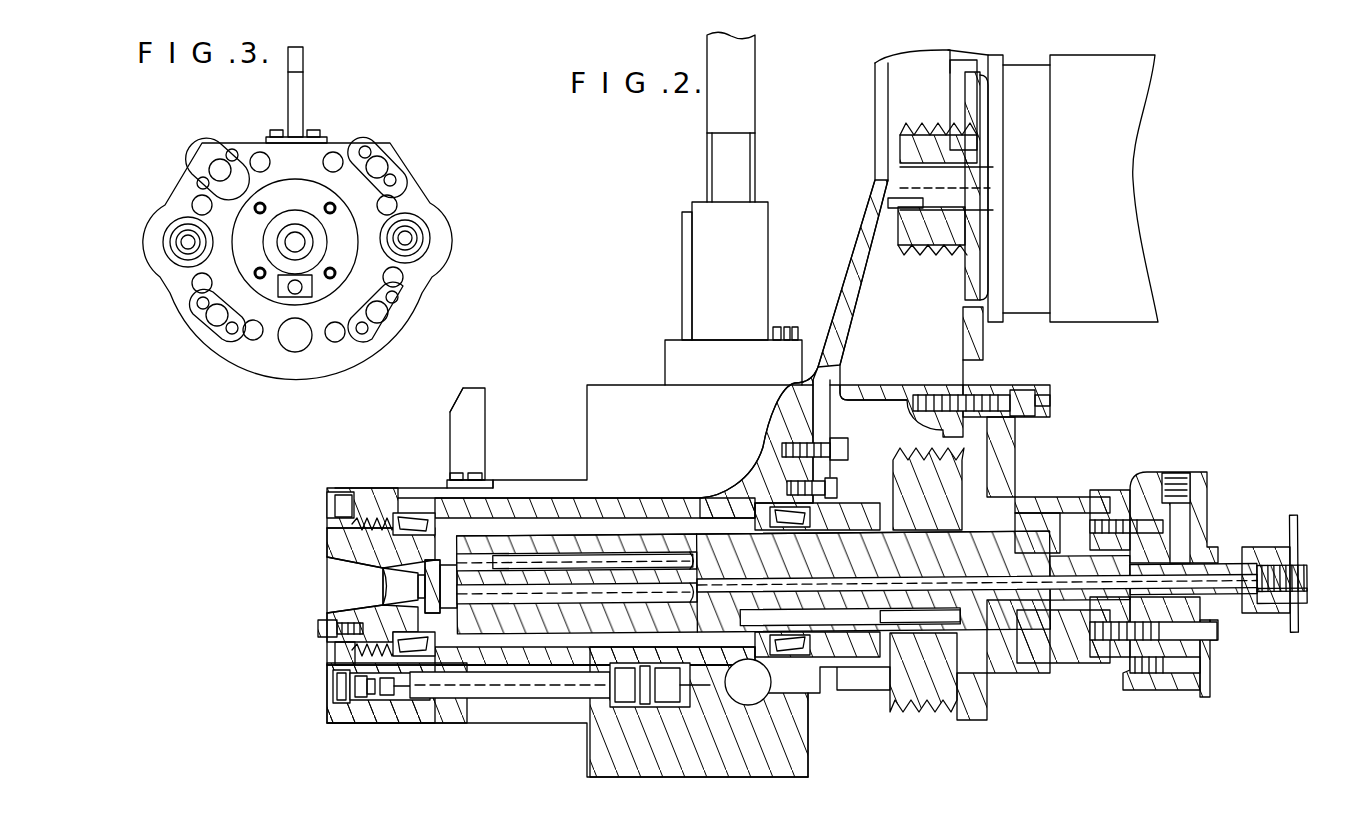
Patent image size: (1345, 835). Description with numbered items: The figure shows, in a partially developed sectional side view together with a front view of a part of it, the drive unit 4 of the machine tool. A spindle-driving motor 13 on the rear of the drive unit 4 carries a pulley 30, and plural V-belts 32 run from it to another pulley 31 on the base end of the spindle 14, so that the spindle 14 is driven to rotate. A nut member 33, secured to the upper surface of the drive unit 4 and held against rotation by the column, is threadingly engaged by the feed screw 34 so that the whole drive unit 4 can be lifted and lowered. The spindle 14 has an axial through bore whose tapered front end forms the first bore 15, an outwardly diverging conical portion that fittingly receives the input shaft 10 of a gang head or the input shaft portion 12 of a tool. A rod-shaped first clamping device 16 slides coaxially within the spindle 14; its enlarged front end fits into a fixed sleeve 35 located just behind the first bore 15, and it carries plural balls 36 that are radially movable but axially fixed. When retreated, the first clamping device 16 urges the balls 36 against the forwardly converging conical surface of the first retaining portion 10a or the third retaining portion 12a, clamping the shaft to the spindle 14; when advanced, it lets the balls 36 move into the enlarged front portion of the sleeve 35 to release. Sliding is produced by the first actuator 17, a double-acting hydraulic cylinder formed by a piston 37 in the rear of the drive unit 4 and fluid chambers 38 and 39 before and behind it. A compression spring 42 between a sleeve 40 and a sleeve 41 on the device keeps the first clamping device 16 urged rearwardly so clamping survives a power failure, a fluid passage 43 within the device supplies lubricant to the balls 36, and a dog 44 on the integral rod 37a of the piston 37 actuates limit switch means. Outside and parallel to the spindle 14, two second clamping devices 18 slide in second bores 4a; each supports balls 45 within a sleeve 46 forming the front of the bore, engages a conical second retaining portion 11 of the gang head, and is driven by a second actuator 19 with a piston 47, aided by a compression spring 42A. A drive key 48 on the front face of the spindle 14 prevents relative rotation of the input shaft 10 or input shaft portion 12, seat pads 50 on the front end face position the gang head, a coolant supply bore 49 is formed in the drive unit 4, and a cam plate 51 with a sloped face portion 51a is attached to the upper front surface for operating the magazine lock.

In FIG. 2, the drive unit 4 is at (811, 766).
In FIG. 2, the second bores 4a is at (343, 713).
In FIG. 2, the input shaft 10 is at (381, 552).
In FIG. 2, the first retaining portion 10a is at (397, 499).
In FIG. 2, the input shaft portion 12 is at (395, 577).
In FIG. 2, the third retaining portion 12a is at (457, 577).
In FIG. 2, the second retaining portions 11 is at (395, 710).
In FIG. 2, the spindle-driving motor 13 is at (1120, 87).
In FIG. 2, the spindle 14 is at (753, 490).
In FIG. 3, the first bore 15 is at (295, 215).
In FIG. 2, the first bore 15 is at (367, 605).
In FIG. 3, the first clamping device 16 is at (305, 245).
In FIG. 2, the first clamping device 16 is at (592, 502).
In FIG. 2, the first actuator or cylinder 17 is at (1120, 517).
In FIG. 3, the second clamping devices 18 is at (410, 238).
In FIG. 2, the second clamping devices 18 is at (410, 700).
In FIG. 2, the second actuators or cylinders 19 is at (662, 713).
In FIG. 2, the pulley 30 is at (925, 225).
In FIG. 2, the pulley 31 is at (880, 690).
In FIG. 2, the V-belts 32 is at (948, 122).
In FIG. 2, the nut member 33 is at (740, 296).
In FIG. 2, the feed screw 34 is at (737, 112).
In FIG. 2, the sleeve 35 is at (457, 597).
In FIG. 2, the balls 36 is at (440, 587).
In FIG. 2, the piston 37 is at (1120, 647).
In FIG. 2, the rod 37a is at (1220, 603).
In FIG. 2, the fluid chamber 38 is at (1090, 643).
In FIG. 2, the fluid chamber 39 is at (1187, 557).
In FIG. 2, the sleeve 40 is at (588, 525).
In FIG. 2, the sleeve 41 is at (843, 543).
In FIG. 2, the compression spring 42 is at (856, 540).
In FIG. 2, the compression spring 42A is at (530, 723).
In FIG. 2, the fluid passage 43 is at (970, 693).
In FIG. 2, the dog 44 is at (1281, 544).
In FIG. 2, the balls 45 is at (372, 700).
In FIG. 2, the sleeve 46 is at (335, 658).
In FIG. 2, the piston 47 is at (675, 705).
In FIG. 3, the drive key 48 is at (285, 295).
In FIG. 2, the drive key 48 is at (322, 618).
In FIG. 3, the coolant supply passage or bore 49 is at (295, 342).
In FIG. 3, the seat pads 50 is at (218, 158).
In FIG. 2, the seat pads 50 is at (327, 507).
In FIG. 3, the cam plate 51 is at (302, 83).
In FIG. 2, the cam plate 51 is at (485, 408).
In FIG. 2, the sloped face portion 51a is at (460, 398).